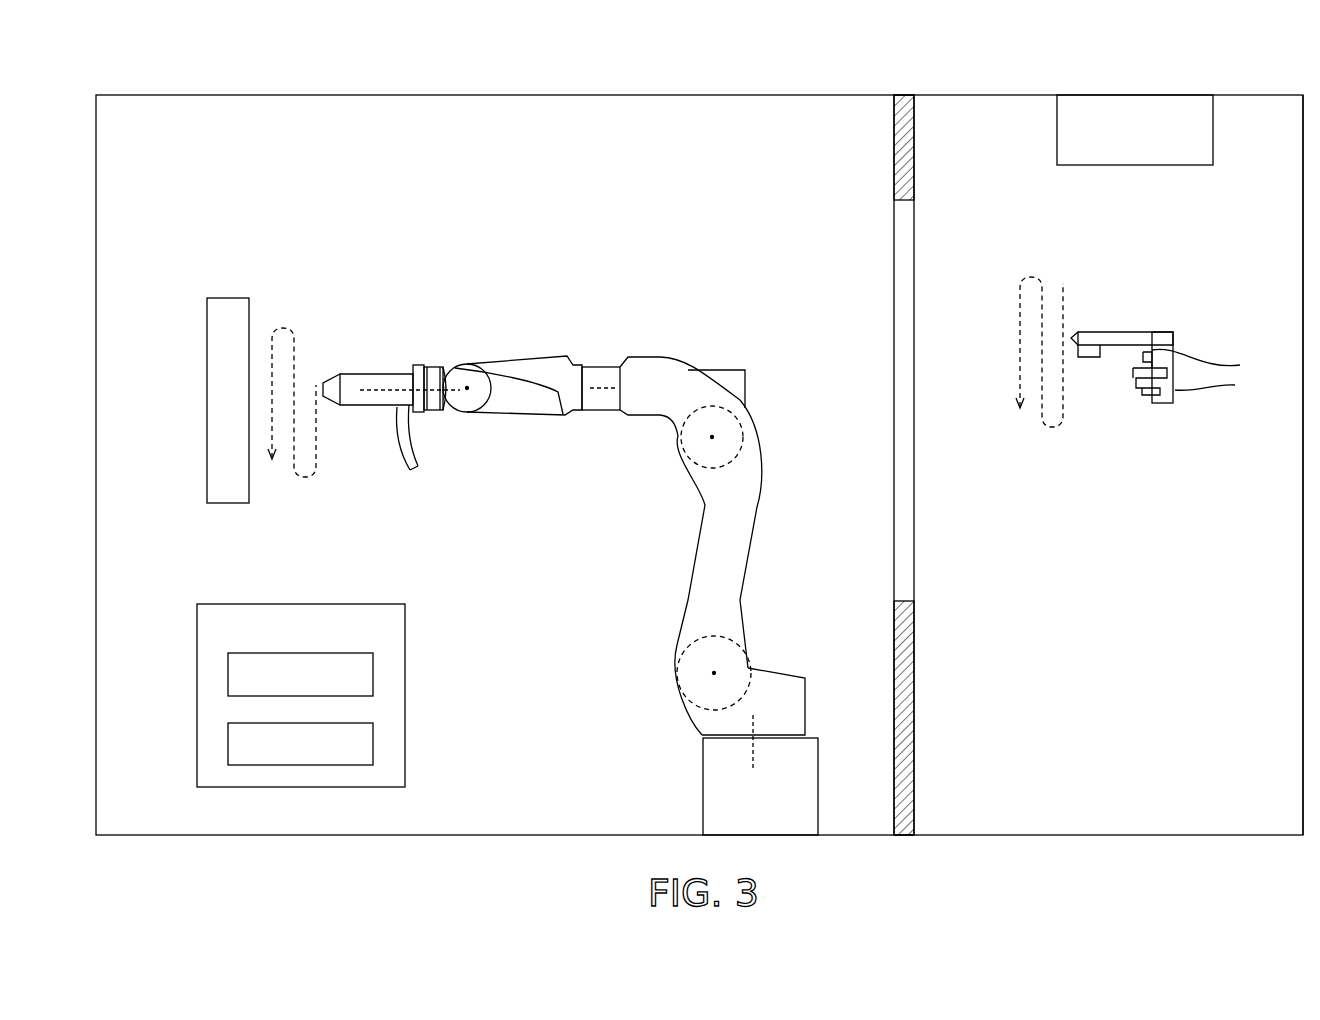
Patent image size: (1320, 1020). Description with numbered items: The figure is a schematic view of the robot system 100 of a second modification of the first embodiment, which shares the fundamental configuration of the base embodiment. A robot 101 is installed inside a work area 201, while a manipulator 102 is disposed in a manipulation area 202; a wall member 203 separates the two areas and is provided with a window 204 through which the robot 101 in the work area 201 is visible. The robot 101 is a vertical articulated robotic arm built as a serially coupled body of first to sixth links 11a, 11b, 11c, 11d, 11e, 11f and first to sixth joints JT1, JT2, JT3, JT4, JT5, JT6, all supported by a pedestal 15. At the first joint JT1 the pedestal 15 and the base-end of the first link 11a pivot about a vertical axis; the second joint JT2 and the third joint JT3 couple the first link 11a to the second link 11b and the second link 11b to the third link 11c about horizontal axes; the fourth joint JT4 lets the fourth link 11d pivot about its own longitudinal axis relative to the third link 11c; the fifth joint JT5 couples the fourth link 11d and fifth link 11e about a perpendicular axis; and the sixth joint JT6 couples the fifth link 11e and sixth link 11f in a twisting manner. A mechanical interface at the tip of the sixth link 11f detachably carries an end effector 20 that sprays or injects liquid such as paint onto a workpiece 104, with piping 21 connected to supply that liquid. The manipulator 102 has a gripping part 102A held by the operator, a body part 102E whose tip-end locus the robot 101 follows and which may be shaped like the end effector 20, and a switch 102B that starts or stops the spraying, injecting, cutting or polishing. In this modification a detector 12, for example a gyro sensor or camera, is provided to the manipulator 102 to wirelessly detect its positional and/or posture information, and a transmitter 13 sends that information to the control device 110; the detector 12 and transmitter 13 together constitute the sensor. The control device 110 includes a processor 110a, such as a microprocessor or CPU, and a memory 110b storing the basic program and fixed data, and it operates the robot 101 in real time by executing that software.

The robot system 100 is at (880, 31).
The work area 201 is at (507, 93).
The manipulation area 202 is at (1263, 93).
The wall member 203 is at (918, 650).
The window 204 is at (918, 450).
The transmitter 13 is at (1057, 125).
The detector 12 is at (1092, 350).
The manipulator 102 is at (1168, 305).
The body part 102E is at (1100, 330).
The switch 102B is at (1143, 350).
The gripping part 102A is at (1161, 308).
The workpiece 104 is at (229, 297).
The end effector 20 is at (378, 373).
The piping 21 is at (396, 434).
The robot 101 is at (627, 542).
The first link 11a is at (800, 672).
The second link 11b is at (760, 522).
The third link 11c is at (655, 356).
The fourth link 11d is at (535, 356).
The fifth link 11e is at (441, 365).
The sixth link 11f is at (418, 363).
The first joint JT1 is at (697, 737).
The second joint JT2 is at (676, 683).
The third joint JT3 is at (677, 453).
The fourth joint JT4 is at (602, 414).
The fifth joint JT5 is at (474, 415).
The sixth joint JT6 is at (432, 412).
The pedestal 15 is at (703, 780).
The control device 110 is at (303, 695).
The processor 110a is at (228, 675).
The memory 110b is at (228, 744).